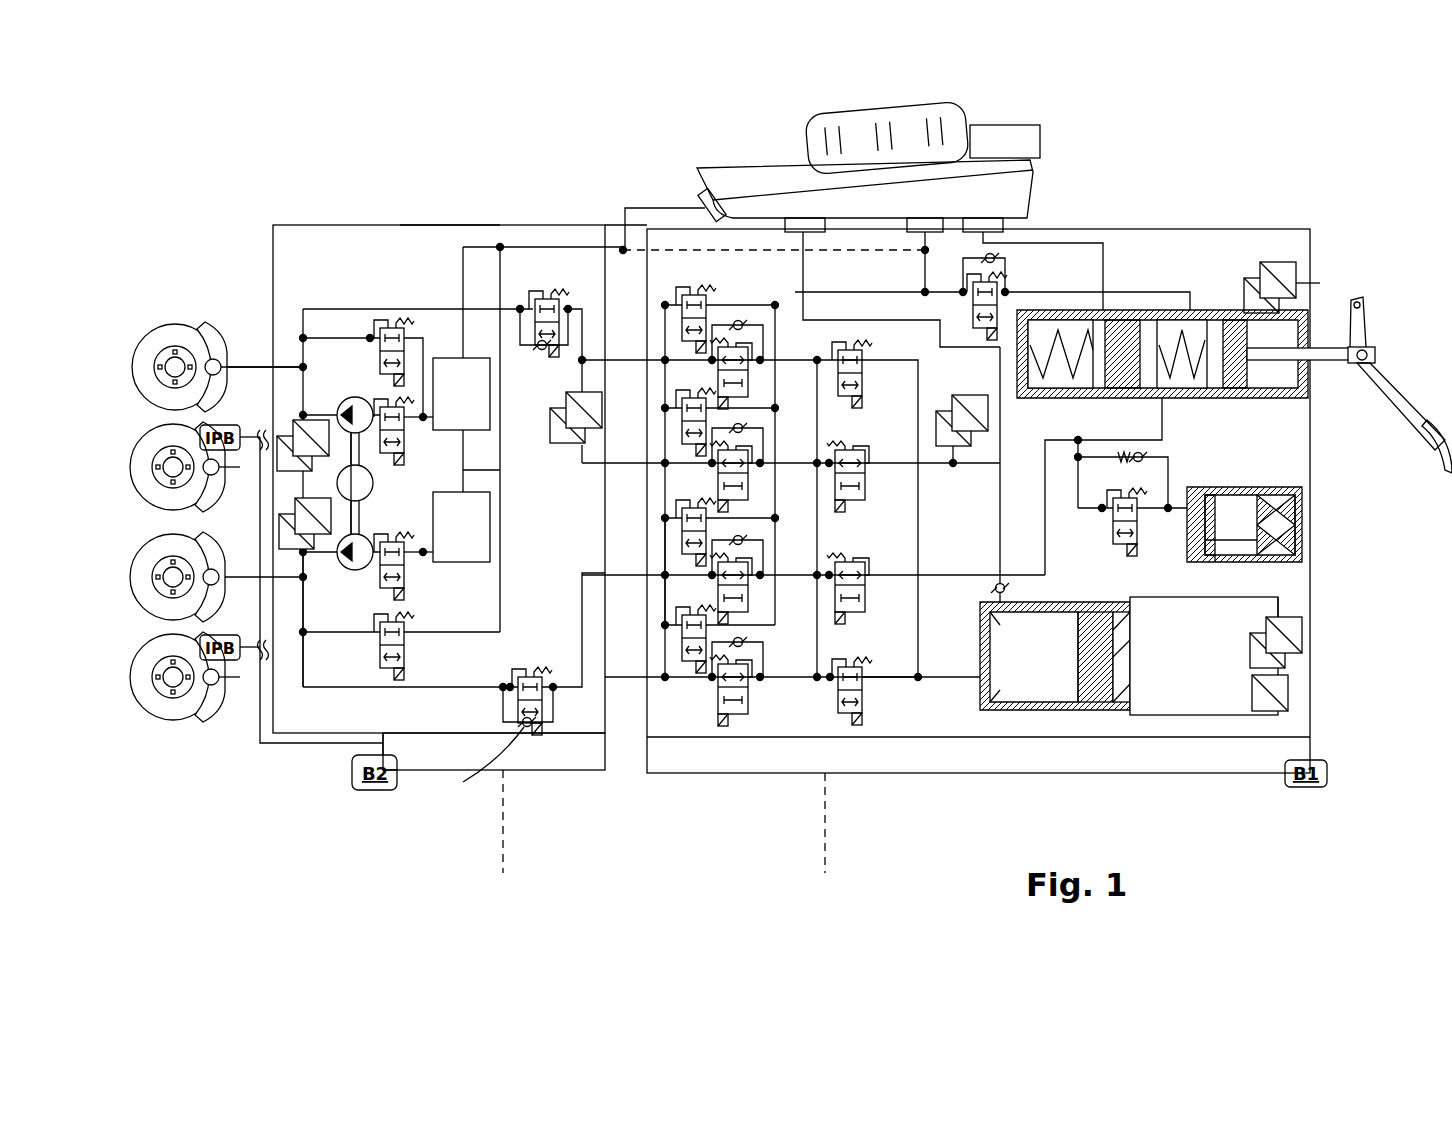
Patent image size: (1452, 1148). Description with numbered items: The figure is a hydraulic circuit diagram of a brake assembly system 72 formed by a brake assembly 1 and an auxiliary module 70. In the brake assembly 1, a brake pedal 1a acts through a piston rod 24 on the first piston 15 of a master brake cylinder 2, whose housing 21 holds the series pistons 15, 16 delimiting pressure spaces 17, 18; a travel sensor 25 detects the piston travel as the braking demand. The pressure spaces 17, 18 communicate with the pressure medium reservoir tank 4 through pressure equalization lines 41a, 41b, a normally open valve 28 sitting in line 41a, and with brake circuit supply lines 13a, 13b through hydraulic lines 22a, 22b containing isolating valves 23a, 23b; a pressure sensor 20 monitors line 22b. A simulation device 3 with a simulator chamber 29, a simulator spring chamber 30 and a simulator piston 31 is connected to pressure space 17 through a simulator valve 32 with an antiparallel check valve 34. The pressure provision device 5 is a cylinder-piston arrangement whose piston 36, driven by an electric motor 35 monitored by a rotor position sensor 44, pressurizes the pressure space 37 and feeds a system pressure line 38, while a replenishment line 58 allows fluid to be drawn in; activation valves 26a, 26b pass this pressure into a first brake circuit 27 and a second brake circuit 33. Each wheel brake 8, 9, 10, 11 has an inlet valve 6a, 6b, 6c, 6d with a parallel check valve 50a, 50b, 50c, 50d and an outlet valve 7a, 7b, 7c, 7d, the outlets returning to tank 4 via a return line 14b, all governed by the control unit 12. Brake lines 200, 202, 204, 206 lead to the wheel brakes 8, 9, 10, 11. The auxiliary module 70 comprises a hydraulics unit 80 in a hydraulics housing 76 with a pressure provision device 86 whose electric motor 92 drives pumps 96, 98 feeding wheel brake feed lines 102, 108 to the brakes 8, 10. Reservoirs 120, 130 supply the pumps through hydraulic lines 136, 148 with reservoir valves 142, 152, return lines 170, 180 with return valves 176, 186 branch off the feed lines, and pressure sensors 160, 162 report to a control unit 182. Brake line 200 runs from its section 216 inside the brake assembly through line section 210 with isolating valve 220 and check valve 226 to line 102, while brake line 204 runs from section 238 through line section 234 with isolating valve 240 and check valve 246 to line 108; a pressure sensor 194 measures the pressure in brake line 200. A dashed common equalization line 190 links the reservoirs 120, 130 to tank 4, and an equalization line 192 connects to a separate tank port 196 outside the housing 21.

The brake assembly 1 is at (1120, 133).
The brake pedal 1a is at (1410, 393).
The master brake cylinder 2 is at (1233, 413).
The simulation device 3 is at (1340, 527).
The pressure medium reservoir tank 4 is at (748, 178).
The pressure provision device 5 is at (1341, 620).
The inlet valve 6a is at (750, 379).
The inlet valve 6b is at (750, 486).
The inlet valve 6c is at (750, 599).
The inlet valve 6d is at (745, 727).
The outlet valve 7a is at (700, 294).
The outlet valve 7b is at (680, 405).
The outlet valve 7c is at (680, 510).
The outlet valve 7d is at (680, 620).
The wheel brake 8 is at (212, 346).
The wheel brake 9 is at (215, 490).
The wheel brake 10 is at (218, 600).
The wheel brake 11 is at (212, 712).
The electronic open-loop and closed-loop control unit 12 is at (1082, 760).
The brake circuit supply line 13a is at (815, 590).
The brake circuit supply line 13b is at (820, 426).
The return line 14b is at (857, 292).
The first master brake cylinder piston 15 is at (1232, 318).
The second piston 16 is at (1122, 318).
The pressure space 17 is at (1180, 390).
The pressure space 18 is at (1062, 390).
The pressure sensor 20 is at (963, 395).
The housing 21 is at (1295, 243).
The hydraulic line 22a is at (1160, 428).
The hydraulic line 22b is at (866, 480).
The isolating valve 23a is at (862, 508).
The isolating valve 23b is at (866, 606).
The piston rod 24 is at (1338, 362).
The travel sensor 25 is at (1298, 282).
The activation valve 26a is at (862, 392).
The activation valve 26b is at (838, 690).
The first brake circuit 27 is at (847, 352).
The valve 28 is at (1002, 290).
The simulator chamber 29 is at (1200, 490).
The simulator spring chamber 30 is at (1265, 490).
The simulator piston 31 is at (1215, 564).
The simulator valve 32 is at (1112, 537).
The second brake circuit 33 is at (847, 656).
The check valve 34 is at (1145, 500).
The electric motor 35 is at (1195, 700).
The pressure piston 36 is at (1115, 705).
The hydraulic pressure space 37 is at (1032, 700).
The system pressure line 38 is at (920, 625).
The pressure equalization line 41a is at (1190, 300).
The pressure equalization line 41b is at (1103, 250).
The rotor position sensor 44 is at (1303, 642).
The check valve 50a is at (742, 318).
The check valve 50b is at (745, 427).
The check valve 50c is at (745, 538).
The check valve 50d is at (745, 641).
The replenishment line 58 is at (1002, 513).
The auxiliary module 70 is at (206, 246).
The brake assembly system 72 is at (597, 177).
The hydraulics housing 76 is at (445, 226).
The hydraulics unit 80 is at (396, 207).
The pressure provision device 86 is at (321, 486).
The electric motor 92 is at (373, 483).
The pump 96 is at (357, 405).
The pump 98 is at (357, 566).
The wheel brake feed line 102 is at (303, 380).
The wheel brake feed line 108 is at (305, 580).
The brake fluid reservoir 120 is at (467, 405).
The reservoir 130 is at (465, 545).
The hydraulic line 136 is at (420, 392).
The reservoir valve 142 is at (405, 447).
The hydraulic line 148 is at (420, 548).
The reservoir valve 152 is at (405, 592).
The pressure sensor 160 is at (298, 440).
The pressure sensor 162 is at (296, 515).
The return line 170 is at (306, 318).
The return valve 176 is at (382, 322).
The return line 180 is at (502, 525).
The open-loop and closed-loop control unit 182 is at (588, 770).
The return valve 186 is at (405, 650).
The common hydraulic equalization line 190 is at (688, 230).
The equalization line 192 is at (626, 210).
The pressure sensor 194 is at (585, 447).
The brake medium tank port 196 is at (693, 198).
The brake line 200 is at (628, 368).
The brake line 202 is at (622, 470).
The brake line 204 is at (622, 582).
The brake line 206 is at (622, 690).
The line section 210 is at (437, 309).
The section 216 is at (660, 355).
The isolating valve 220 is at (563, 287).
The check valve 226 is at (541, 352).
The line section 234 is at (582, 575).
The section 238 is at (660, 560).
The isolating valve 240 is at (545, 655).
The check valve 246 is at (463, 782).